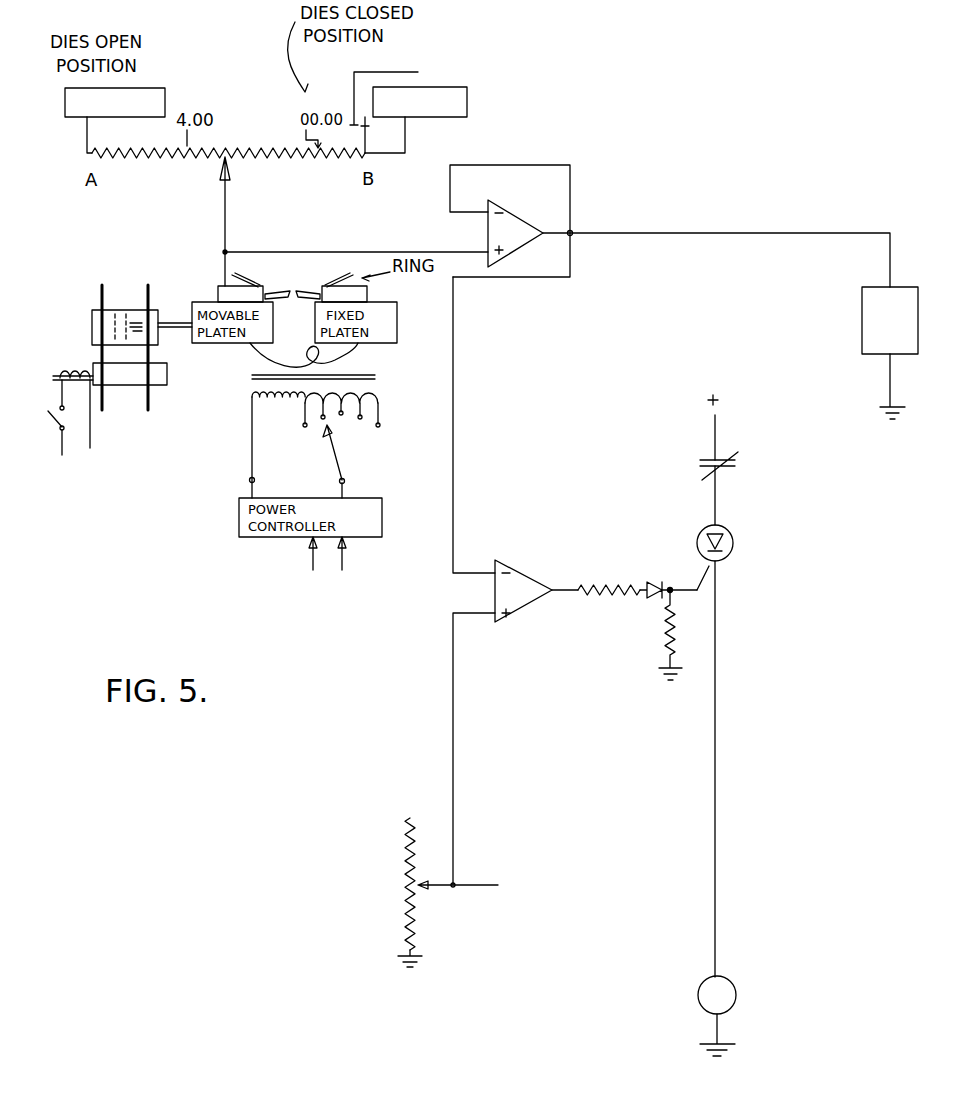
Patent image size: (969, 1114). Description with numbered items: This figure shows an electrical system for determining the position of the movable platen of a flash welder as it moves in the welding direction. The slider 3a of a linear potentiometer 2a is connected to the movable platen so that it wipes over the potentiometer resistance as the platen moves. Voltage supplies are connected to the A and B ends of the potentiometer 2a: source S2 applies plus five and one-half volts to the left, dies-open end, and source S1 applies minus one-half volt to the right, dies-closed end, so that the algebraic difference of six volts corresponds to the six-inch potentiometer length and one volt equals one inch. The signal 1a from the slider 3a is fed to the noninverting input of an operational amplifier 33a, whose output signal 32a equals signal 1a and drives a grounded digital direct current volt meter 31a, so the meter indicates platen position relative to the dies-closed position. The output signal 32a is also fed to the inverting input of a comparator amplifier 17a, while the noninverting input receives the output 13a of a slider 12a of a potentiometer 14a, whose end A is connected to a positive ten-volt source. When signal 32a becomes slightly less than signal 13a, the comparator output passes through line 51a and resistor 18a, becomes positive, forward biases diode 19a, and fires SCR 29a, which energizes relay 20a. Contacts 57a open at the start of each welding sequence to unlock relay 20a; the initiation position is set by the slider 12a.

The signal 1a is at (333, 250).
The linear potentiometer 2a is at (176, 168).
The slider 3a is at (224, 223).
The slider 12a is at (485, 888).
The output 13a is at (453, 760).
The potentiometer 14a is at (418, 933).
The comparator amplifier 17a is at (515, 546).
The resistor 18a is at (614, 583).
The diode 19a is at (653, 603).
The relay 20a is at (735, 985).
The SCR 29a is at (778, 721).
The digital direct current volt meter 31a is at (862, 318).
The output signal 32a is at (672, 233).
The operational amplifier 33a is at (520, 214).
The output line of comparator 51a is at (556, 585).
The contacts 57a is at (741, 456).
The source S1 is at (467, 99).
The source S2 is at (66, 104).